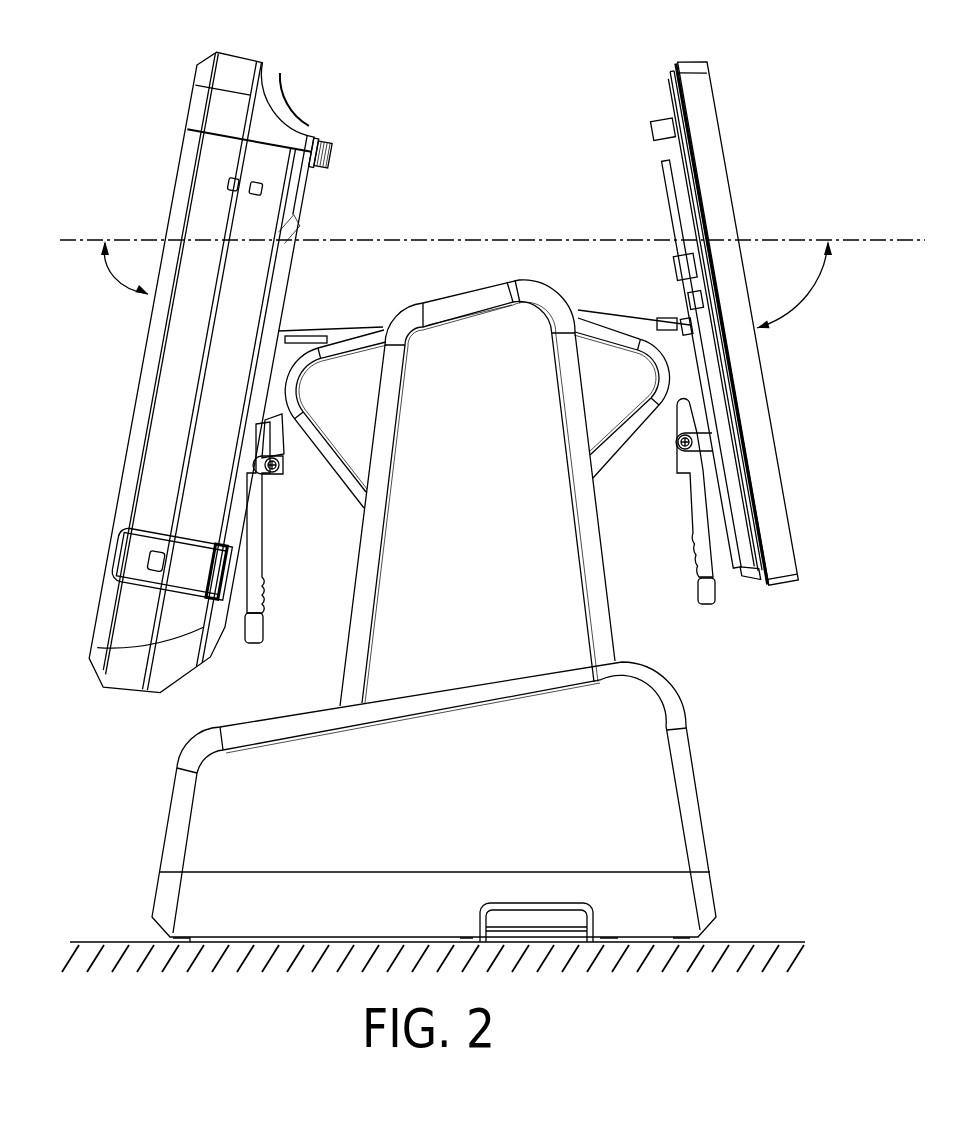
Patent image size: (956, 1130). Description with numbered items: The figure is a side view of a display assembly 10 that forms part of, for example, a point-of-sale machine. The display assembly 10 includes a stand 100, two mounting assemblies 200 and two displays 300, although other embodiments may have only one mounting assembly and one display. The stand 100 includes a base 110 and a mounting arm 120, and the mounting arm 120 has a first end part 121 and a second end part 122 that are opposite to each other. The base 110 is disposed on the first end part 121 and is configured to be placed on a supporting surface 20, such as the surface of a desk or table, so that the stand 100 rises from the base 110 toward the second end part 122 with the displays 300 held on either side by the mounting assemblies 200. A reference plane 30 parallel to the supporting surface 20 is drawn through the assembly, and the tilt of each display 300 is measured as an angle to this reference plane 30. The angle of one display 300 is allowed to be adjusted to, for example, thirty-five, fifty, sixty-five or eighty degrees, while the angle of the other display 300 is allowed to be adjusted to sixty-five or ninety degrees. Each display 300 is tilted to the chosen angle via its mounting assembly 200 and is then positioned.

The display assembly 10 is at (203, 45).
The supporting surface 20 is at (748, 942).
The reference plane 30 is at (482, 240).
The stand 100 is at (477, 480).
The base 110 is at (466, 796).
The mounting arm 120 is at (548, 503).
The first end part 121 is at (502, 663).
The second end part 122 is at (470, 293).
The mounting assembly 200 is at (292, 486).
The display 300 is at (276, 83).